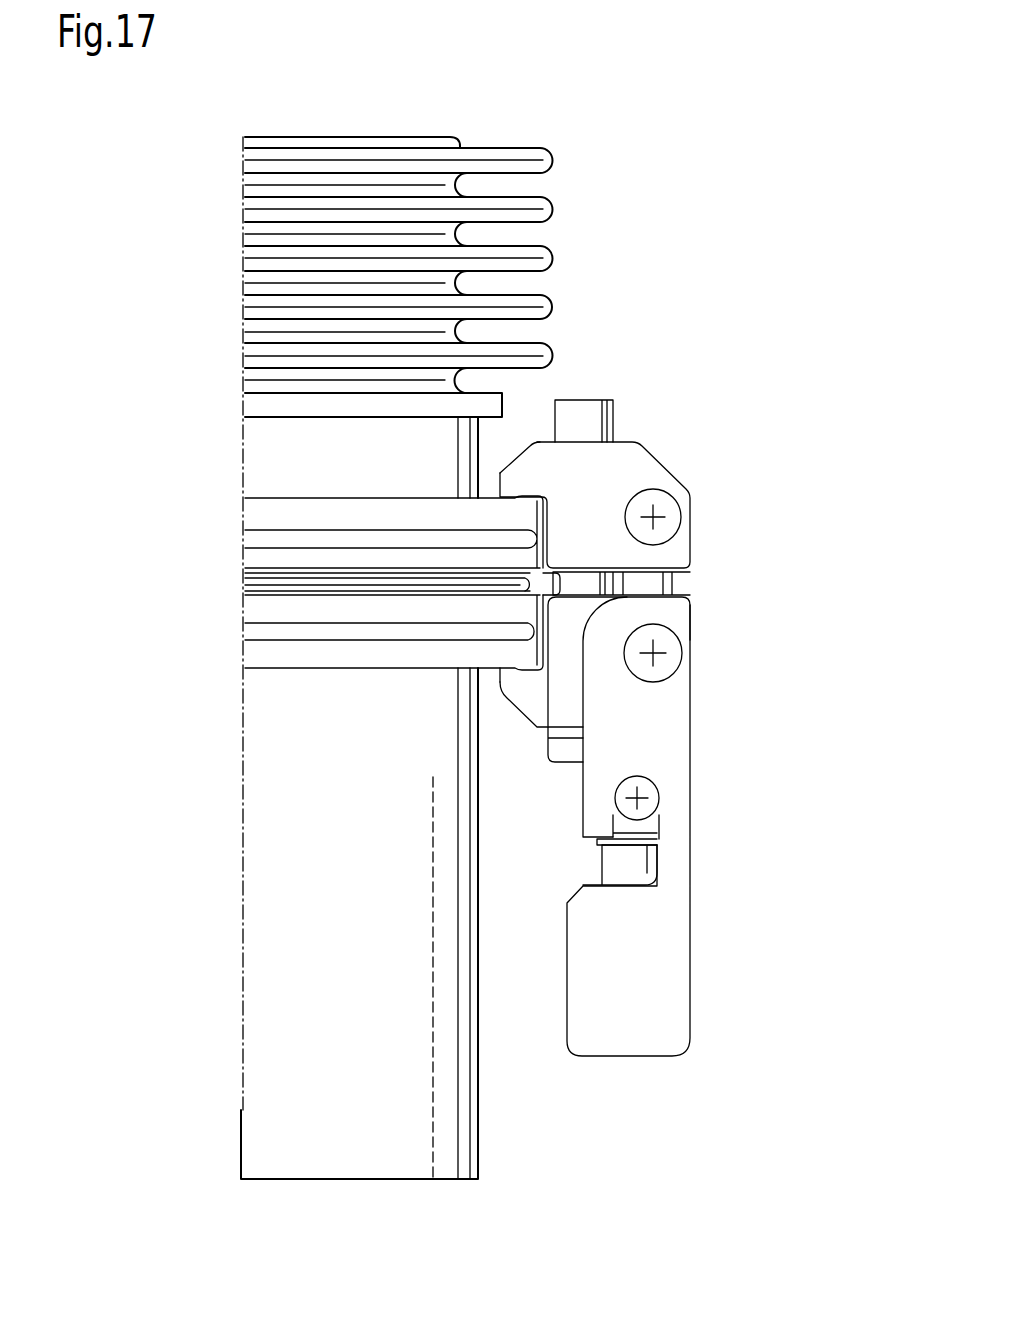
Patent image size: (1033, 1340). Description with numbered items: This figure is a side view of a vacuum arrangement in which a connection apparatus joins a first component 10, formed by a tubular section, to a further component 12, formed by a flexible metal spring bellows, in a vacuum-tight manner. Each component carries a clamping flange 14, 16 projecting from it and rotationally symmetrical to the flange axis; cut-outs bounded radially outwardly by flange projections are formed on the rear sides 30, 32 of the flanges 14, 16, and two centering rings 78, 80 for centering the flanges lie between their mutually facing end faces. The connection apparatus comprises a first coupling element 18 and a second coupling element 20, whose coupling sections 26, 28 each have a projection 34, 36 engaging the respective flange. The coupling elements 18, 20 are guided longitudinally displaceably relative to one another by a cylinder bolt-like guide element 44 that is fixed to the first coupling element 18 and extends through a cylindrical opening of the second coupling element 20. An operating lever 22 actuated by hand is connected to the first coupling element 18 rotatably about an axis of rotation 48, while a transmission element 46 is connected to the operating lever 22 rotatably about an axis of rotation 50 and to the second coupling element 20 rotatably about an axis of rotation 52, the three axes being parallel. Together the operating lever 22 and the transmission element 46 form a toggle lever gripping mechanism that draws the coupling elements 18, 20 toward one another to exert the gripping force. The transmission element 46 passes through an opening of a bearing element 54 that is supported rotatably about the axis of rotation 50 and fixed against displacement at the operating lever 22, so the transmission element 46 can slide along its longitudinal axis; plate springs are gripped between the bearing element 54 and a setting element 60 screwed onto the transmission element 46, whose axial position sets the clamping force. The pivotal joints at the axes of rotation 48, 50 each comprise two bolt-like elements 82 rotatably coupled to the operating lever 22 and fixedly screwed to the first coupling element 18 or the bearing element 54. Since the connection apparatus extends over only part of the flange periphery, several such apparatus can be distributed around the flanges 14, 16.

The first component 10 is at (372, 1153).
The further component 12 is at (527, 157).
The clamping flange 14 is at (265, 655).
The clamping flange 16 is at (255, 558).
The first coupling element 18 is at (690, 603).
The second coupling element 20 is at (637, 460).
The operating lever 22 is at (675, 1046).
The coupling section 26 is at (547, 700).
The coupling section 28 is at (528, 440).
The rear side 30 is at (272, 670).
The rear side 32 is at (273, 498).
The projection 34 is at (493, 672).
The projection 36 is at (493, 483).
The guide element 44 is at (595, 402).
The transmission element 46 is at (677, 580).
The axis of rotation 48 is at (655, 653).
The axis of rotation 50 is at (625, 798).
The axis of rotation 52 is at (667, 512).
The bearing element 54 is at (648, 826).
The setting element 60 is at (625, 865).
The centering ring 78 is at (260, 598).
The centering ring 80 is at (260, 583).
The bolt-like elements 82 is at (665, 663).